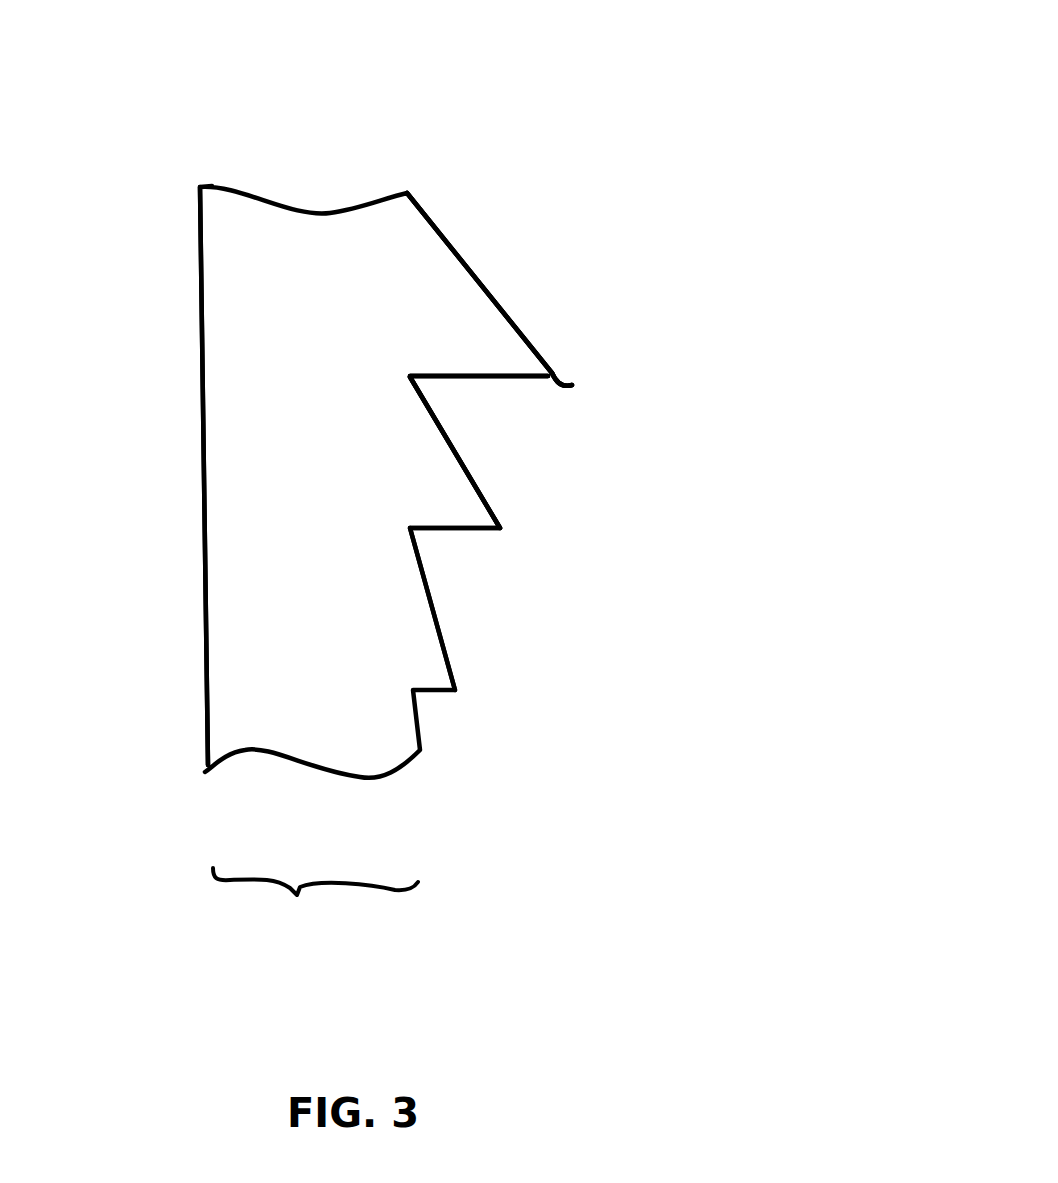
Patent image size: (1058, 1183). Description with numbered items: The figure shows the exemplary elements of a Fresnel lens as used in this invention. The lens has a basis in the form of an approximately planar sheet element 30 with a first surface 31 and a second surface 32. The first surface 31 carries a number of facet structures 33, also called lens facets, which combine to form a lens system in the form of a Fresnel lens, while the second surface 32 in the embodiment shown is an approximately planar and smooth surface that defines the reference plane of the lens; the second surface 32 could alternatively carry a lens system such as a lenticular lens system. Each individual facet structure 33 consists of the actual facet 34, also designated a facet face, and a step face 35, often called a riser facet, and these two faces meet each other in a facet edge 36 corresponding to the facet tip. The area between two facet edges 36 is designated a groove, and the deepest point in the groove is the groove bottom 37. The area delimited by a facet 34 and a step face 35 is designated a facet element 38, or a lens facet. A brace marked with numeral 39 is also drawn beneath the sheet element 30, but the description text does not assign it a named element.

The planar sheet element 30 is at (300, 172).
The first surface 31 is at (786, 497).
The second surface 32 is at (208, 532).
The facet structures 33 is at (592, 274).
The facet 34 is at (470, 270).
The step face 35 is at (483, 377).
The facet edge 36 is at (572, 385).
The groove bottom 37 is at (418, 540).
The facet element 38 is at (457, 512).
The base width 39 is at (315, 939).